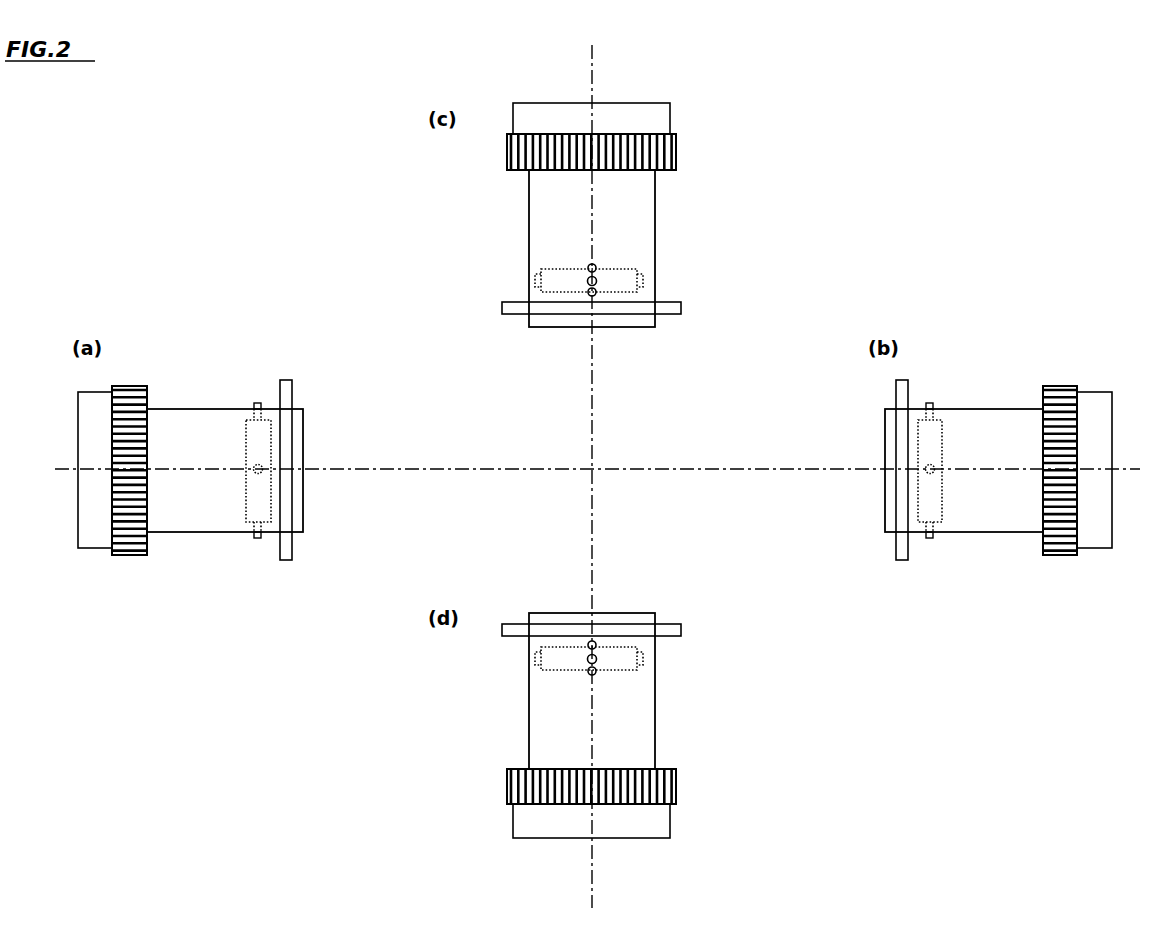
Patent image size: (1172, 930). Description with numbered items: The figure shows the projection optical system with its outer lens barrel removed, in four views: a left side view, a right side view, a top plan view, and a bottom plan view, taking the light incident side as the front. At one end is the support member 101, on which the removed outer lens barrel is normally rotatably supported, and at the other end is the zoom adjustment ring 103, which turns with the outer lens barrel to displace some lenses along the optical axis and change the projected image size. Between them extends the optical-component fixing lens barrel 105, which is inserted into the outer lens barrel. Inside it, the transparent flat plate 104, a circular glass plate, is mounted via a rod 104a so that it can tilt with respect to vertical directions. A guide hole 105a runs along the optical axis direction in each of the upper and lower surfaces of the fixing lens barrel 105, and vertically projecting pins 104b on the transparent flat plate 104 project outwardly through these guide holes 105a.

The support member 101 is at (285, 562).
The zoom adjustment ring 103 is at (142, 388).
The transparent flat plate 104 is at (258, 466).
The rod 104a is at (261, 467).
The pins 104b is at (256, 538).
The optical-component fixing lens barrel 105 is at (217, 402).
The guide hole 105a is at (598, 267).